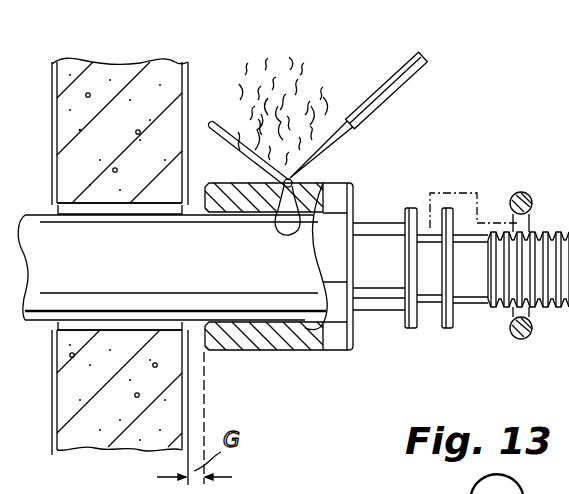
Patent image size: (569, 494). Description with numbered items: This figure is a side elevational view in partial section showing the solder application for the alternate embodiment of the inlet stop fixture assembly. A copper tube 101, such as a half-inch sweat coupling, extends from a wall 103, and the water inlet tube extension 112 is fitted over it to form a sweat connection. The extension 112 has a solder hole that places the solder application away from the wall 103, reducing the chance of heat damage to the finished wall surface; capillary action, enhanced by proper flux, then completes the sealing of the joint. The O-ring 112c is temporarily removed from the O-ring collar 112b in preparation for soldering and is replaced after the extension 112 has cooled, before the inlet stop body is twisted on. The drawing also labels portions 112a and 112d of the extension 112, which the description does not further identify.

The copper tube 101 is at (181, 275).
The wall 103 is at (190, 85).
The water inlet tube extension 112 is at (387, 249).
The flange collar 112a is at (273, 348).
The O-ring collar 112b is at (427, 340).
The O-ring 112c is at (521, 192).
The O-ring seal 112d is at (540, 340).